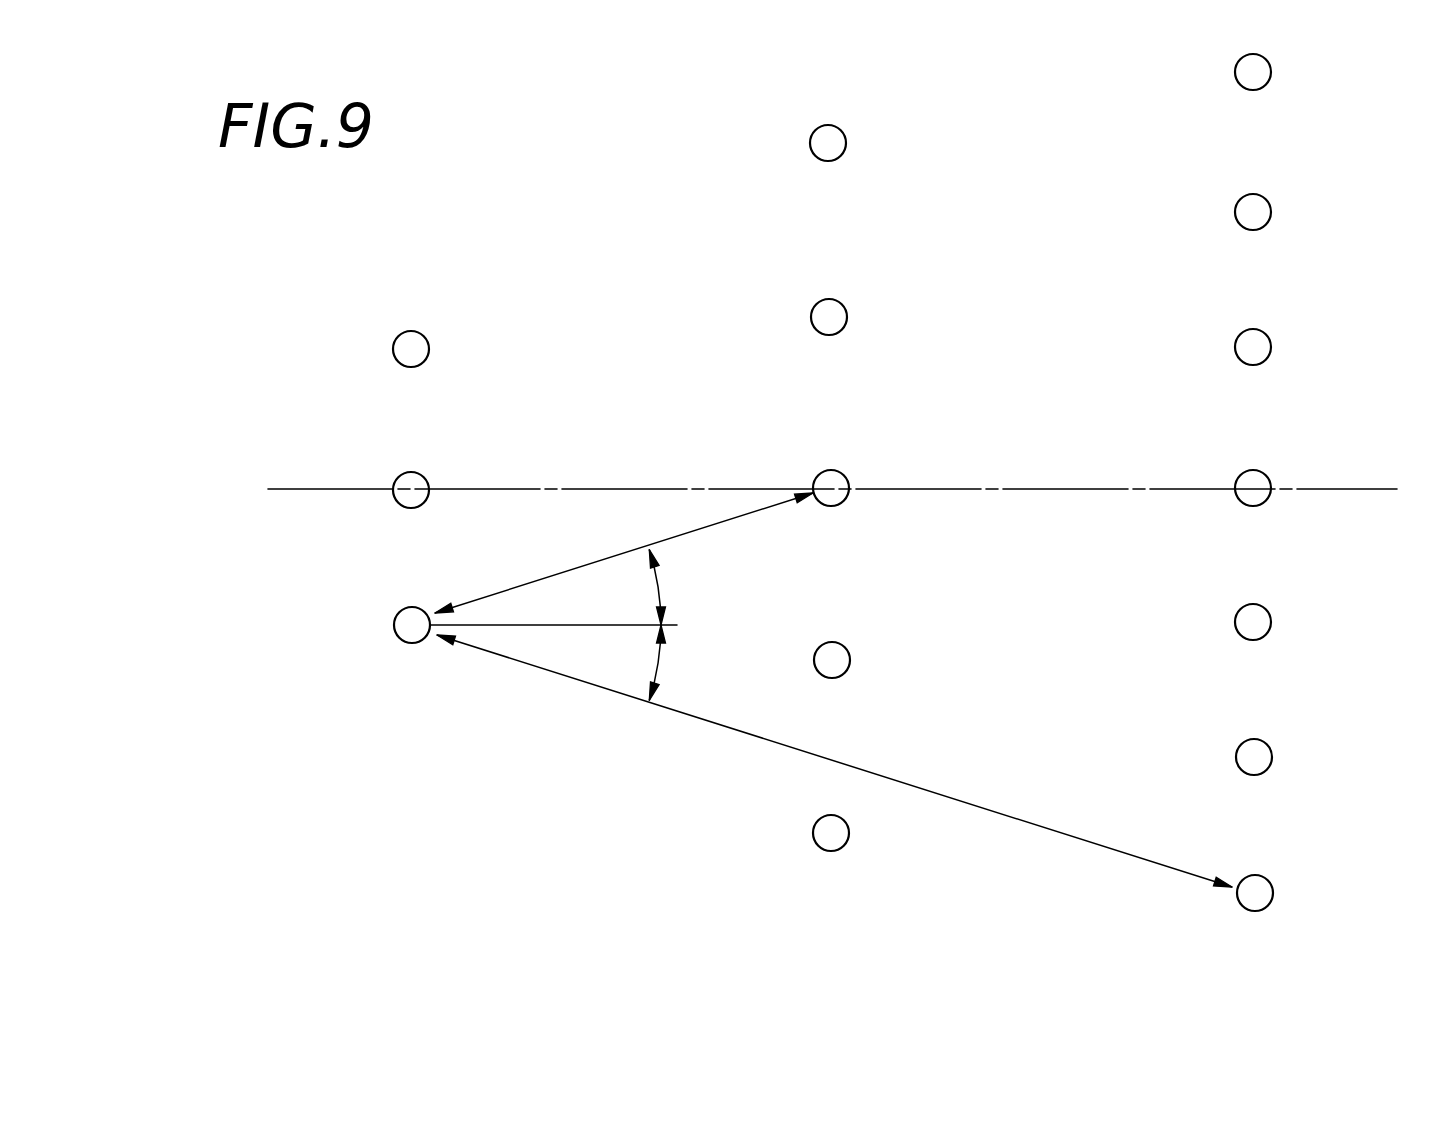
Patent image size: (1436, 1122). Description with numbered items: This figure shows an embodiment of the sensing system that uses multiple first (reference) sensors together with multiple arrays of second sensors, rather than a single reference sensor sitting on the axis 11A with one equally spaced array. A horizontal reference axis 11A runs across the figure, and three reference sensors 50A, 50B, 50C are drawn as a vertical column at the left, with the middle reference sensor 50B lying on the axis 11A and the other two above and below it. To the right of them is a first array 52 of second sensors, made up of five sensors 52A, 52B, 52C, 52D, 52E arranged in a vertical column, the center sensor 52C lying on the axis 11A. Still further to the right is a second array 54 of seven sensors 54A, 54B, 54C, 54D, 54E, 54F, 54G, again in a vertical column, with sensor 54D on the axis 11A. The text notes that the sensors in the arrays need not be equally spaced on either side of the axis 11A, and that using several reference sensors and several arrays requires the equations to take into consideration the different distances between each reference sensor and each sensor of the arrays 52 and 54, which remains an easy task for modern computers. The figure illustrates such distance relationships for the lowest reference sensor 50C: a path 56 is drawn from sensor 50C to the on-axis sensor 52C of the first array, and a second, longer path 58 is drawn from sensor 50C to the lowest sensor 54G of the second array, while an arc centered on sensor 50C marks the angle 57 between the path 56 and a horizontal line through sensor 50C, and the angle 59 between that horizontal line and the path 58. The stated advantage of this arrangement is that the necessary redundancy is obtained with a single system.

The axis 11A is at (1060, 488).
The reference sensor 50A is at (398, 333).
The reference sensor 50B is at (399, 476).
The reference sensor 50C is at (400, 610).
The array of second sensors 52 is at (775, 133).
The array sensor 52A is at (845, 134).
The array sensor 52B is at (846, 308).
The array sensor 52C is at (841, 474).
The array sensor 52D is at (847, 650).
The array sensor 52E is at (845, 845).
The array of second sensors 54 is at (1193, 137).
The array sensor 54A is at (1270, 78).
The array sensor 54B is at (1271, 212).
The array sensor 54C is at (1267, 334).
The array sensor 54D is at (1262, 472).
The array sensor 54E is at (1263, 607).
The array sensor 54F is at (1268, 742).
The array sensor 54G is at (1270, 880).
The first ray path 56 is at (520, 587).
The first deflection angle 57 is at (664, 585).
The second ray path 58 is at (1097, 840).
The second deflection angle 59 is at (660, 665).